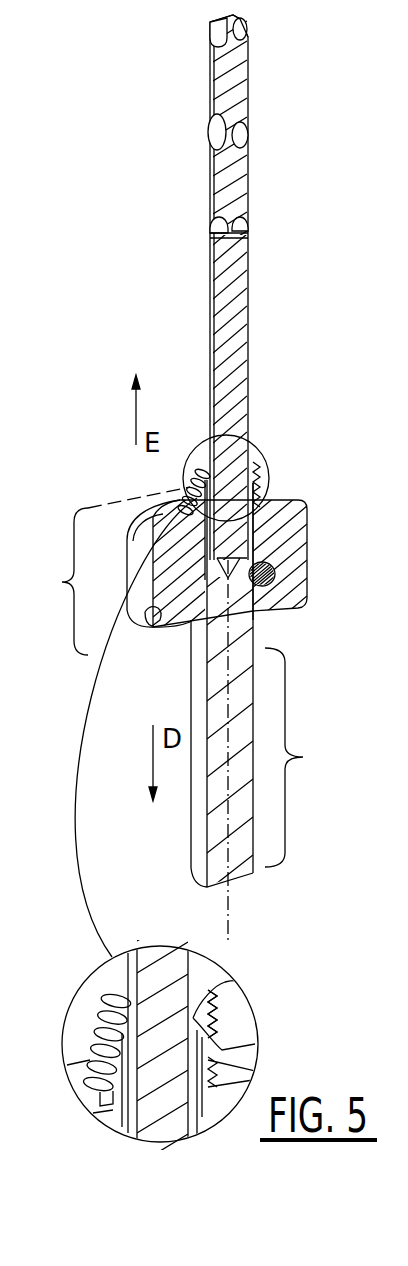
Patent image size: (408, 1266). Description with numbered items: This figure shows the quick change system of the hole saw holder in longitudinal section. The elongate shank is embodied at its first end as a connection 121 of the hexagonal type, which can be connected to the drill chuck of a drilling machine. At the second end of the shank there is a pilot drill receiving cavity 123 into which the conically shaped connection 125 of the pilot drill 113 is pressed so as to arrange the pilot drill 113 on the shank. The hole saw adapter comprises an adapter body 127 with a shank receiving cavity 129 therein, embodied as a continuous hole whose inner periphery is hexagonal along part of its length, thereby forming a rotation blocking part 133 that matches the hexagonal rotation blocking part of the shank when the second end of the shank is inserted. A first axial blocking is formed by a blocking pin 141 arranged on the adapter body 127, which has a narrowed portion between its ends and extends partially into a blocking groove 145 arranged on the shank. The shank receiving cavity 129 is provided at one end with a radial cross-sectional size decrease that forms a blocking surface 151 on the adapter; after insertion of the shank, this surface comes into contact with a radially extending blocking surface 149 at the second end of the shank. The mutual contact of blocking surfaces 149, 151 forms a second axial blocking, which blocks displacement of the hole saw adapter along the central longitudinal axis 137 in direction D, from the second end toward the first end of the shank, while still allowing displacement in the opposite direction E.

The pilot drill 113 is at (268, 347).
The conically shaped connection 125 is at (232, 393).
The pilot drill receiving cavity 123 is at (235, 560).
The blocking pin 141 is at (268, 576).
The rotation blocking part 133 is at (105, 571).
The blocking groove 145 is at (157, 612).
The adapter body 127 is at (182, 623).
The blocking surface 149 is at (278, 643).
The connection 121 is at (267, 704).
The central longitudinal axis 137 is at (230, 918).
The shank receiving cavity 129 is at (115, 990).
The blocking surface 151 is at (210, 993).